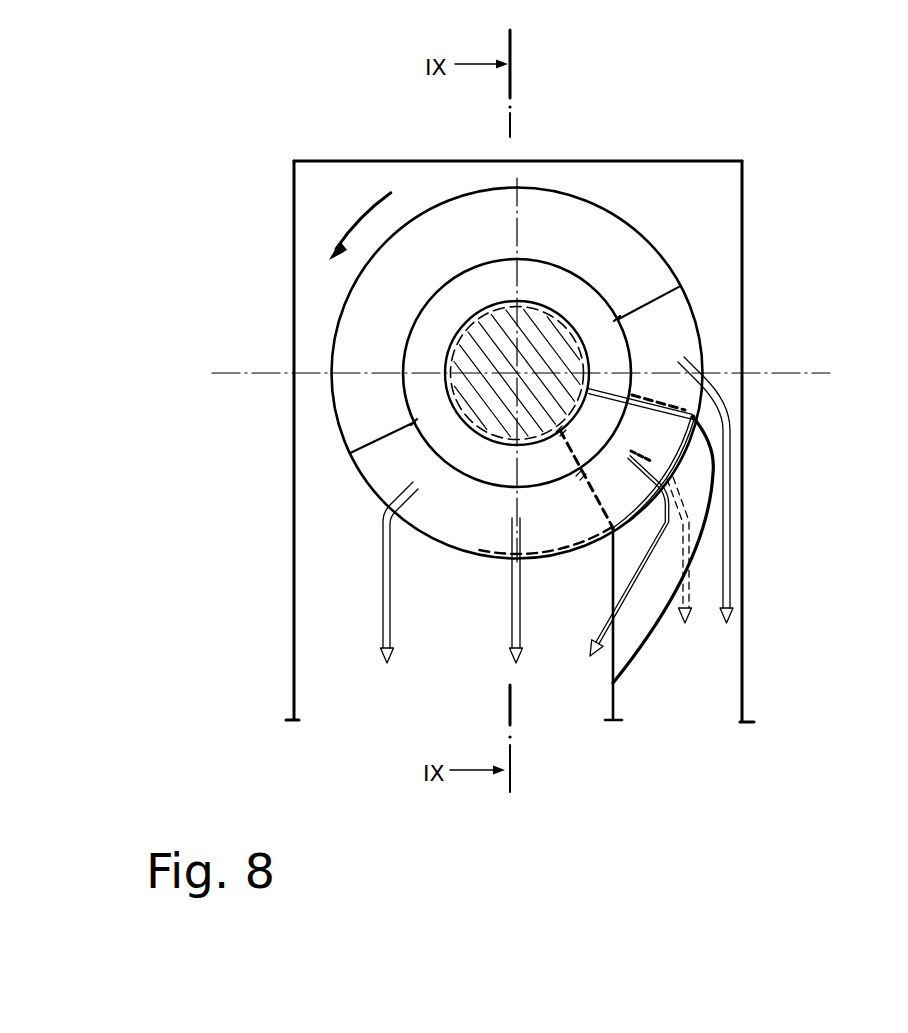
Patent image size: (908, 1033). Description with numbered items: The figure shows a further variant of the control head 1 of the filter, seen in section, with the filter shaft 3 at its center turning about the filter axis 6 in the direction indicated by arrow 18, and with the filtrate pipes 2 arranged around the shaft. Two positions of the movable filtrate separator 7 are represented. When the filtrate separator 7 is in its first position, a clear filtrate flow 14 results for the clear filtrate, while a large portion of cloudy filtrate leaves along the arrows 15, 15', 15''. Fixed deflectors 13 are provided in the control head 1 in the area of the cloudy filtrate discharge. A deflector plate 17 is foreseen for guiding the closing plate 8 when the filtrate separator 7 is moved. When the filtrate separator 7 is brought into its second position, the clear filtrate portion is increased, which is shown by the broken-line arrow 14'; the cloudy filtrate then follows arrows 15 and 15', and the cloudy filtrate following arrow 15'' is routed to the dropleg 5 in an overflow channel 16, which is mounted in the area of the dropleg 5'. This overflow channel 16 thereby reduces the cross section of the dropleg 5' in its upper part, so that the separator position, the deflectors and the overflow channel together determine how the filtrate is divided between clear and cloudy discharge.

The control head 1 is at (703, 158).
The filtrate pipes 2 is at (357, 329).
The filter shaft 3 is at (541, 332).
The dropleg 5 is at (260, 440).
The dropleg 5' is at (775, 441).
The filter axis 6 is at (509, 369).
The filtrate separator 7 is at (697, 376).
The closing plate 8 is at (682, 453).
The fixed deflectors 13 is at (373, 447).
The clear filtrate flow 14 is at (742, 490).
The clear filtrate flow 14' is at (734, 550).
The cloudy filtrate flow 15 is at (408, 592).
The cloudy filtrate flow 15' is at (537, 615).
The cloudy filtrate flow 15'' is at (629, 586).
The overflow channel 16 is at (652, 613).
The deflector plate 17 is at (484, 562).
The arrow of rotation 18 is at (355, 215).